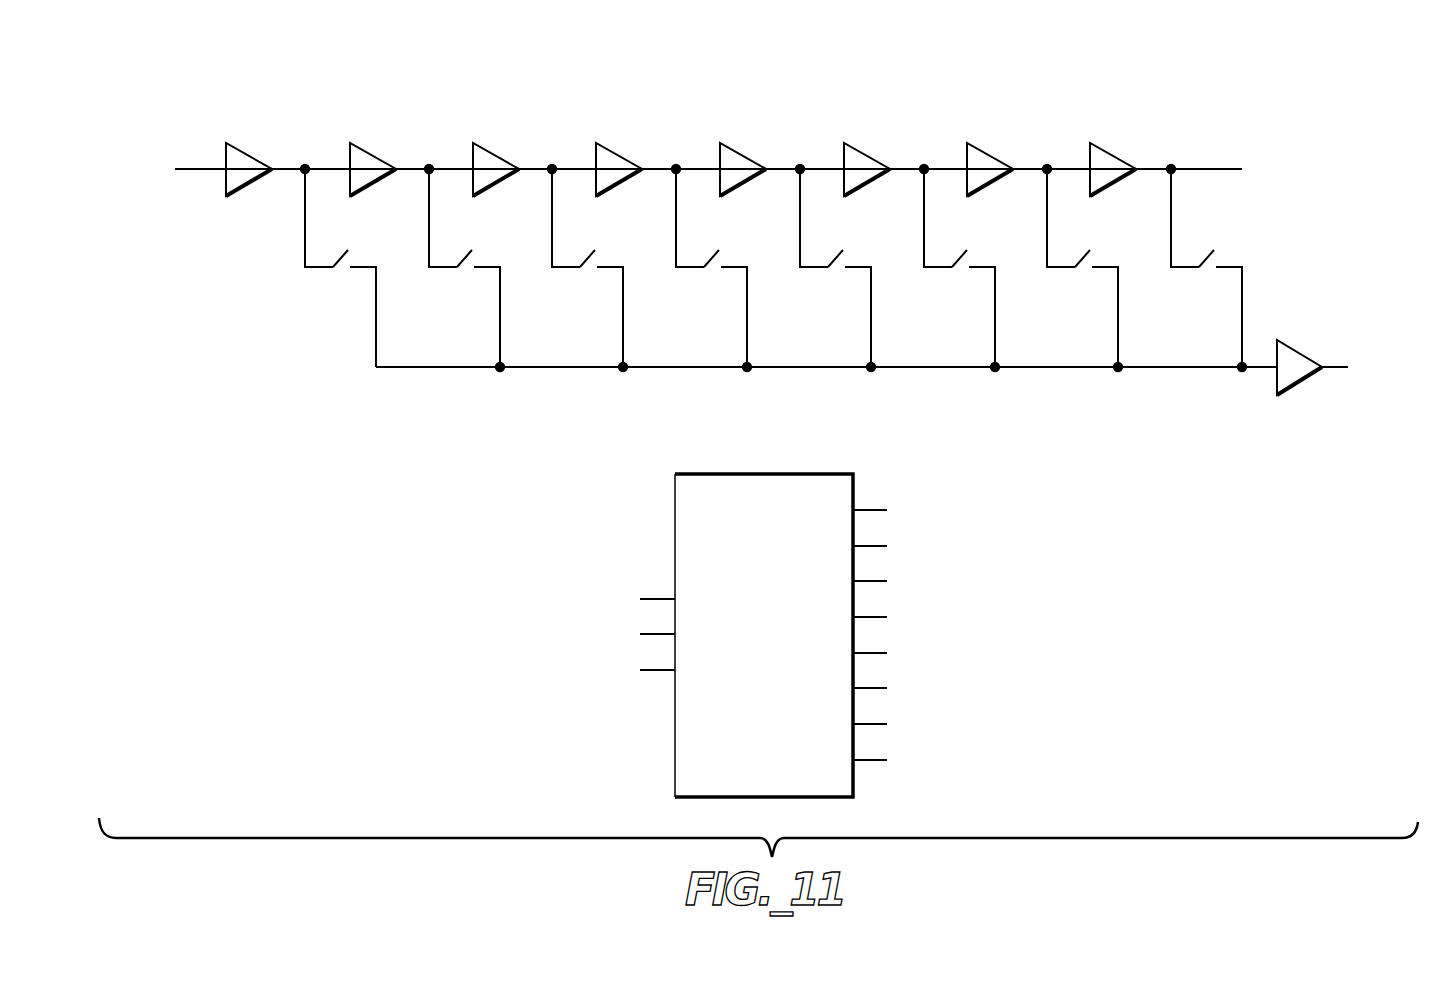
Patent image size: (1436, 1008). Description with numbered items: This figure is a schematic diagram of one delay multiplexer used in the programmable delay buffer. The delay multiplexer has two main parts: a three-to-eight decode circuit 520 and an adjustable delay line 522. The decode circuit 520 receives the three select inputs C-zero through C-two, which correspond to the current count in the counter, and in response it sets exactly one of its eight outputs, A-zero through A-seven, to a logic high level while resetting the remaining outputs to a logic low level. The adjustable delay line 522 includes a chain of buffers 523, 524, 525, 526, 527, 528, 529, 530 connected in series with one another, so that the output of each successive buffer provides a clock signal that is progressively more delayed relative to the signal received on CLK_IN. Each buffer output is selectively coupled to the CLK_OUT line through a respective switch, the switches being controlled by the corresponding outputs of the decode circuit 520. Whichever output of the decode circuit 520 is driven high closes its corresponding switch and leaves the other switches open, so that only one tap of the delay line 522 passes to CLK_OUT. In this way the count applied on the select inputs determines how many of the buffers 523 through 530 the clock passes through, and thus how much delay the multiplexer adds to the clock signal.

The three-to-eight decode circuit 520 is at (675, 535).
The adjustable delay line 522 is at (231, 74).
The buffer 523 is at (241, 146).
The buffer 524 is at (365, 146).
The buffer 525 is at (488, 146).
The buffer 526 is at (611, 146).
The buffer 527 is at (735, 146).
The buffer 528 is at (859, 146).
The buffer 529 is at (982, 146).
The buffer 530 is at (1105, 146).